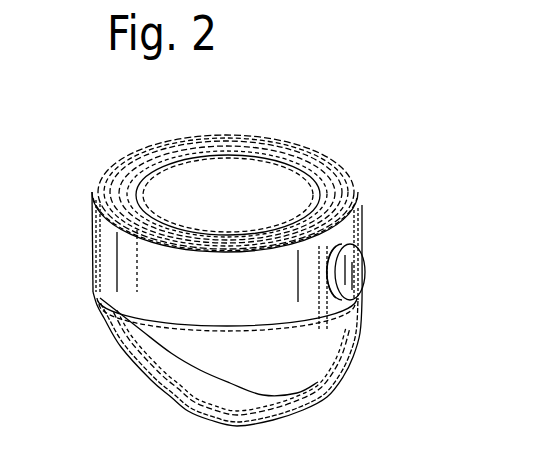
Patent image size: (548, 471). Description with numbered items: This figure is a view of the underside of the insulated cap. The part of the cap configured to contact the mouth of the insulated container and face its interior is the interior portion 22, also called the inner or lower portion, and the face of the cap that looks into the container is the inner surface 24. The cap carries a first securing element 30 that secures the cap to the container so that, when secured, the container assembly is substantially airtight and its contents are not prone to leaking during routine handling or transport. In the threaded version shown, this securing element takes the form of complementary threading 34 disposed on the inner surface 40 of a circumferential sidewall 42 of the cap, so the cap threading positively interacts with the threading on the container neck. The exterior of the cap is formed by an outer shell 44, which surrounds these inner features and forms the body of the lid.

The interior portion 22 is at (232, 133).
The inner surface 24 is at (211, 205).
The first securing element 30 is at (304, 161).
The threading 34 is at (135, 172).
The inner surface 40 is at (178, 155).
The circumferential sidewall 42 is at (92, 233).
The outer shell 44 is at (360, 188).